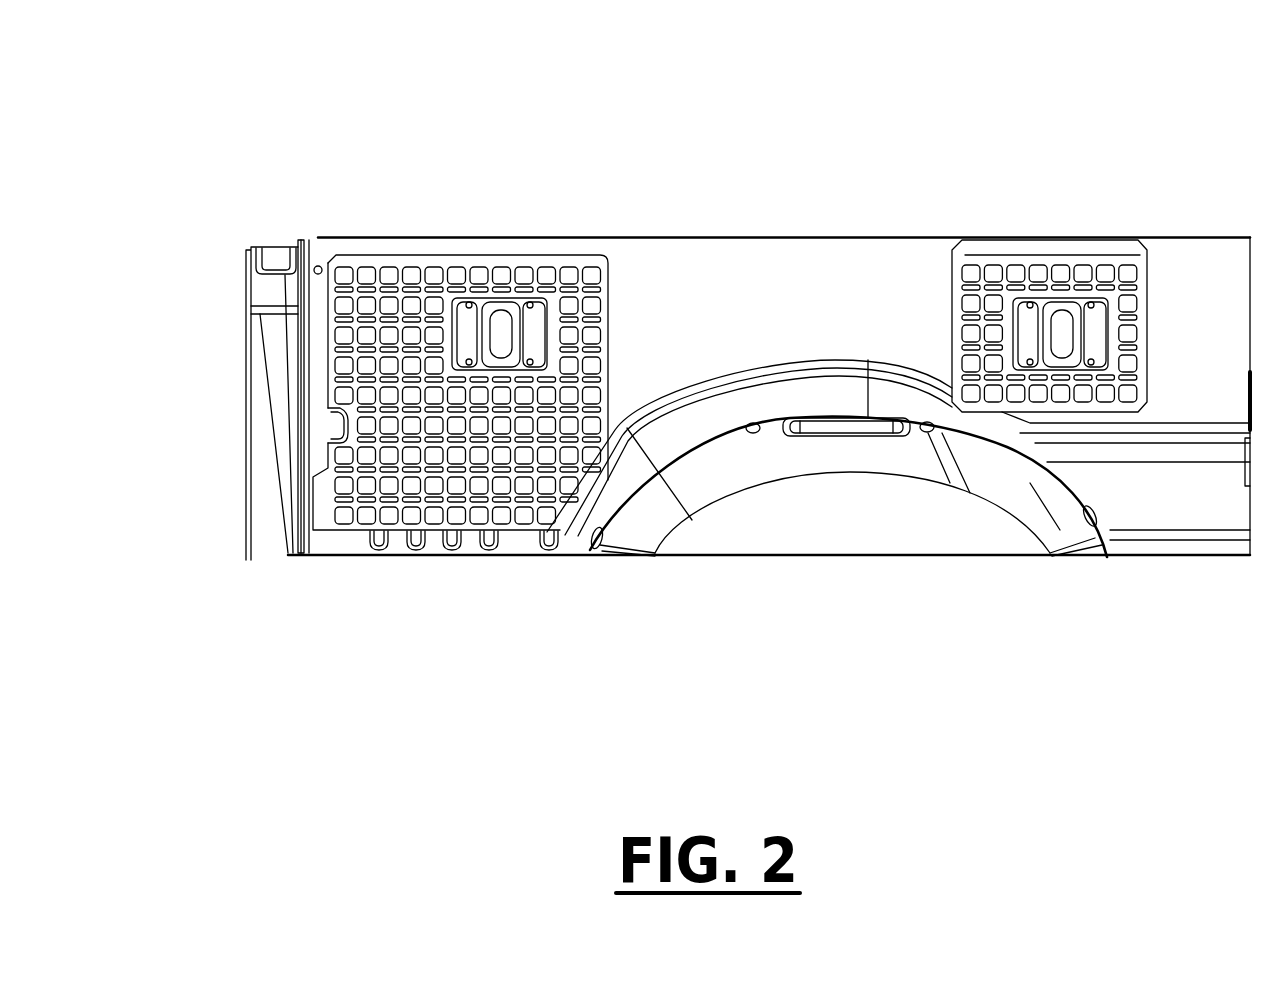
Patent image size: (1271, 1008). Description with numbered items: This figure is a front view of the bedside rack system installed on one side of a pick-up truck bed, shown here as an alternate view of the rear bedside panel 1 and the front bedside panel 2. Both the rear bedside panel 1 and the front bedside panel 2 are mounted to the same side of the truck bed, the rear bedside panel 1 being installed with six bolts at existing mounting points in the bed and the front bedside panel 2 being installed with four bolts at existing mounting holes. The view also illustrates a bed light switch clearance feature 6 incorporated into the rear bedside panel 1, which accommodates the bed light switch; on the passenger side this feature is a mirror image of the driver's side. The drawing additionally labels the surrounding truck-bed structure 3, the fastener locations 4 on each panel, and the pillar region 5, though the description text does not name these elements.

The rear bedside panel 1 is at (412, 258).
The front bedside panel 2 is at (1063, 262).
The vehicle body side panel 3 is at (757, 260).
The tie-down fastener plate 4 is at (530, 307).
The door pillar 5 is at (305, 530).
The bed light switch clearance feature 6 is at (332, 427).